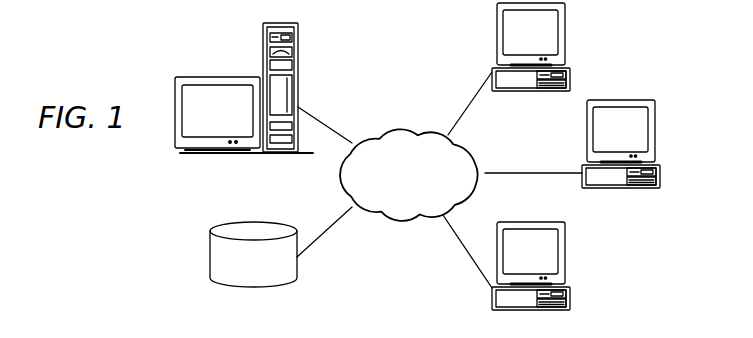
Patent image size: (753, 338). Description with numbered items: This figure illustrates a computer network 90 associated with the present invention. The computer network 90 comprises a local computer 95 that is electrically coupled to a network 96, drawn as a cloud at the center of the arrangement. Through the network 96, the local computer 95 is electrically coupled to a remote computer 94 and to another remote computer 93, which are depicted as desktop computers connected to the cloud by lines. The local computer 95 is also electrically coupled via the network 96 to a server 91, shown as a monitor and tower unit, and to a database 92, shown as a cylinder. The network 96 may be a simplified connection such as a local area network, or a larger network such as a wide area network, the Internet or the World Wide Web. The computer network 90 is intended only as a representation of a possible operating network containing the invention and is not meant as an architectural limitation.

The computer network 90 is at (148, 210).
The server 91 is at (222, 77).
The database 92 is at (210, 255).
The remote computer 93 is at (565, 248).
The remote computer 94 is at (655, 130).
The local computer 95 is at (565, 35).
The network 96 is at (421, 190).